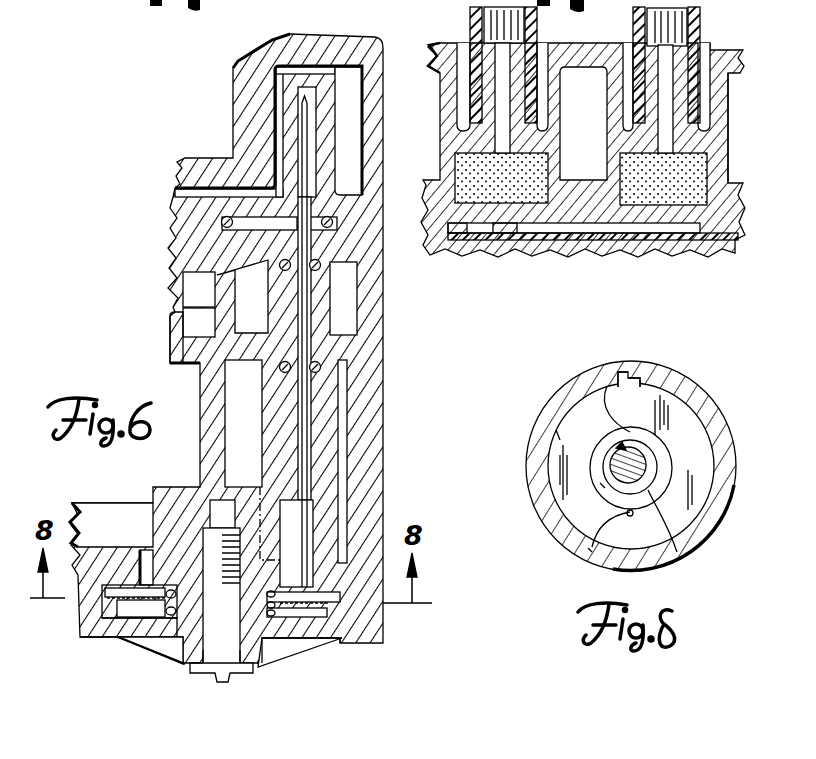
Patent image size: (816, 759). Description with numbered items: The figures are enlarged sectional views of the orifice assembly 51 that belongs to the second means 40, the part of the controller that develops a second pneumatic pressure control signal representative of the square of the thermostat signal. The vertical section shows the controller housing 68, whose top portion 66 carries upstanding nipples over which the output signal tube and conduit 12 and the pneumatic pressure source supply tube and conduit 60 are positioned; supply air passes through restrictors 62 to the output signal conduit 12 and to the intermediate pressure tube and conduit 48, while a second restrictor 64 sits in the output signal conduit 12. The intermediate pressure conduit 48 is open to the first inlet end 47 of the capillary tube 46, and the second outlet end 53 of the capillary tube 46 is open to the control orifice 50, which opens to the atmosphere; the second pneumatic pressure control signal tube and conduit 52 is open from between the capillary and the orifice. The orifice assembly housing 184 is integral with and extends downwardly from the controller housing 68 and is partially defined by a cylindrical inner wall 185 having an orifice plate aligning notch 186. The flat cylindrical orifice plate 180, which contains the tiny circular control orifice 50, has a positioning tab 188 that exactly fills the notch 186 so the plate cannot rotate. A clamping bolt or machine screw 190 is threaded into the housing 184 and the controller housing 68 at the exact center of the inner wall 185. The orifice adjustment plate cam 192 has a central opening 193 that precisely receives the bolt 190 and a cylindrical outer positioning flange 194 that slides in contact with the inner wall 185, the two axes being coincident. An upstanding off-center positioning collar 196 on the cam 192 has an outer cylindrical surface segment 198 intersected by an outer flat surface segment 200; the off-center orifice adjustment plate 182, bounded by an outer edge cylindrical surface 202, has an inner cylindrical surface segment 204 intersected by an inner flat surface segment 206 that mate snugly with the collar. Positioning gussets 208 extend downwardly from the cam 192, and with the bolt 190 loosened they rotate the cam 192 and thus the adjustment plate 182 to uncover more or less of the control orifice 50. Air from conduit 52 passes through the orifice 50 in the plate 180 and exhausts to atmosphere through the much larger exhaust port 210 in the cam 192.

In FIG. 6, the output signal tube and conduit 12 is at (700, 16).
In FIG. 6, the second means 40 is at (163, 344).
In FIG. 6, the capillary tube 46 is at (305, 325).
In FIG. 6, the first inlet end 47 is at (305, 135).
In FIG. 6, the intermediate pressure tube and conduit 48 is at (303, 95).
In FIG. 8, the control orifice 50 is at (563, 513).
In FIG. 6, the orifice assembly 51 is at (134, 652).
In FIG. 8, the orifice assembly 51 is at (740, 473).
In FIG. 6, the second pneumatic pressure control signal tube and conduit 52 is at (333, 595).
In FIG. 6, the second outlet end 53 is at (298, 547).
In FIG. 6, the pneumatic pressure source supply tube and conduit 60 is at (470, 23).
In FIG. 6, the restrictors 62 is at (487, 252).
In FIG. 6, the second restrictor 64 is at (690, 252).
In FIG. 6, the top portion 66 is at (730, 180).
In FIG. 6, the controller housing 68 is at (370, 436).
In FIG. 6, the orifice member or plate 180 is at (115, 585).
In FIG. 8, the orifice member or plate 180 is at (570, 428).
In FIG. 6, the off-center orifice adjustment plate 182 is at (128, 603).
In FIG. 8, the off-center orifice adjustment plate 182 is at (602, 485).
In FIG. 6, the orifice assembly housing 184 is at (78, 612).
In FIG. 8, the orifice assembly housing 184 is at (588, 549).
In FIG. 6, the cylindrical inner wall 185 is at (348, 641).
In FIG. 8, the cylindrical inner wall 185 is at (557, 434).
In FIG. 8, the orifice plate aligning notch 186 is at (637, 376).
In FIG. 8, the positioning tab 188 is at (622, 445).
In FIG. 6, the orifice adjustment plate clamping bolt or machine screw 190 is at (212, 673).
In FIG. 8, the orifice adjustment plate clamping bolt or machine screw 190 is at (672, 430).
In FIG. 6, the orifice adjustment plate cam 192 is at (335, 638).
In FIG. 8, the orifice adjustment plate cam 192 is at (643, 428).
In FIG. 6, the central opening 193 is at (207, 651).
In FIG. 6, the cylindrical outer positioning flange 194 is at (118, 640).
In FIG. 6, the off-center orifice adjustment plate positioning collar 196 is at (212, 646).
In FIG. 8, the off-center orifice adjustment plate positioning collar 196 is at (652, 470).
In FIG. 8, the outer cylindrical surface segment 198 is at (657, 462).
In FIG. 8, the outer flat surface segment 200 is at (602, 482).
In FIG. 8, the outer edge cylindrical surface 202 is at (602, 466).
In FIG. 8, the inner cylindrical surface segment 204 is at (672, 556).
In FIG. 8, the inner flat surface segment 206 is at (630, 372).
In FIG. 6, the positioning gussets 208 is at (275, 648).
In FIG. 6, the exhaust port 210 is at (302, 641).